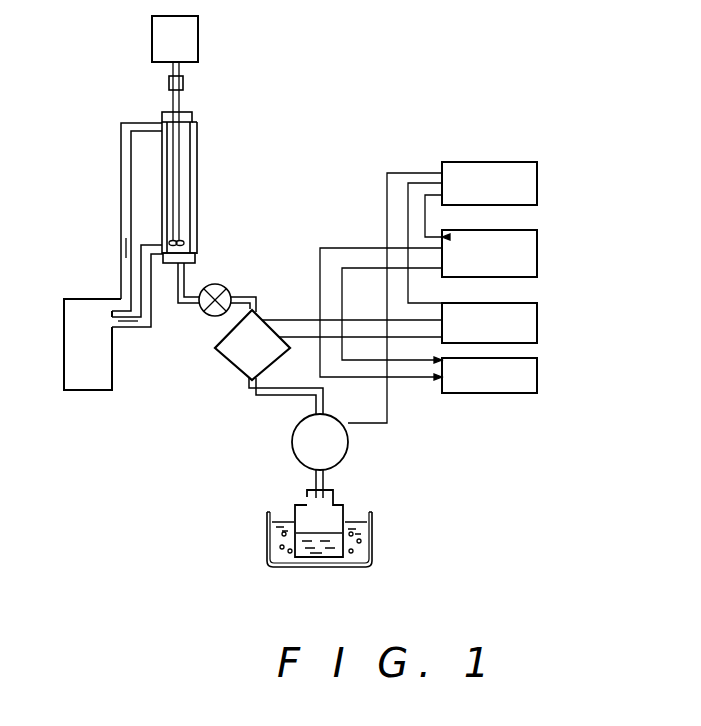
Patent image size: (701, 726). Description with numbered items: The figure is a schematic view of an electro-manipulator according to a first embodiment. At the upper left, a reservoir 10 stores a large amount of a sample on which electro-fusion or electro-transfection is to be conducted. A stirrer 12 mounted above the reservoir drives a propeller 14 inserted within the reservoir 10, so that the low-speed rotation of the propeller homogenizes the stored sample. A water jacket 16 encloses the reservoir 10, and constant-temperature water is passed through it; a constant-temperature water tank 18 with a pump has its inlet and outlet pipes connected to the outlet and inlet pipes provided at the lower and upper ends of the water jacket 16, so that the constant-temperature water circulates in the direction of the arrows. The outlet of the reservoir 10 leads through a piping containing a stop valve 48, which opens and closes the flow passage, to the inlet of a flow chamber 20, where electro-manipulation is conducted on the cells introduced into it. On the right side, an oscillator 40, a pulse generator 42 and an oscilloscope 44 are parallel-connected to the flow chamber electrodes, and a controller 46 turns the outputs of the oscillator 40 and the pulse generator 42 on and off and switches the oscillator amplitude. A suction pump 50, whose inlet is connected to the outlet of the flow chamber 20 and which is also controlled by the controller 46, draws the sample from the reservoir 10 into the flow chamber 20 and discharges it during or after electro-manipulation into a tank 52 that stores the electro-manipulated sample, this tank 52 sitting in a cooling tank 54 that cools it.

The reservoir 10 is at (190, 182).
The stirrer 12 is at (198, 40).
The propeller 14 is at (182, 240).
The water jacket 16 is at (198, 138).
The constant-temperature water tank 18 is at (63, 338).
The flow chamber 20 is at (233, 365).
The oscillator 40 is at (537, 297).
The pulse generator 42 is at (537, 318).
The oscilloscope 44 is at (537, 375).
The controller 46 is at (537, 182).
The stop valve 48 is at (222, 291).
The suction pump 50 is at (348, 447).
The tank 52 is at (343, 505).
The cooling tank 54 is at (266, 526).